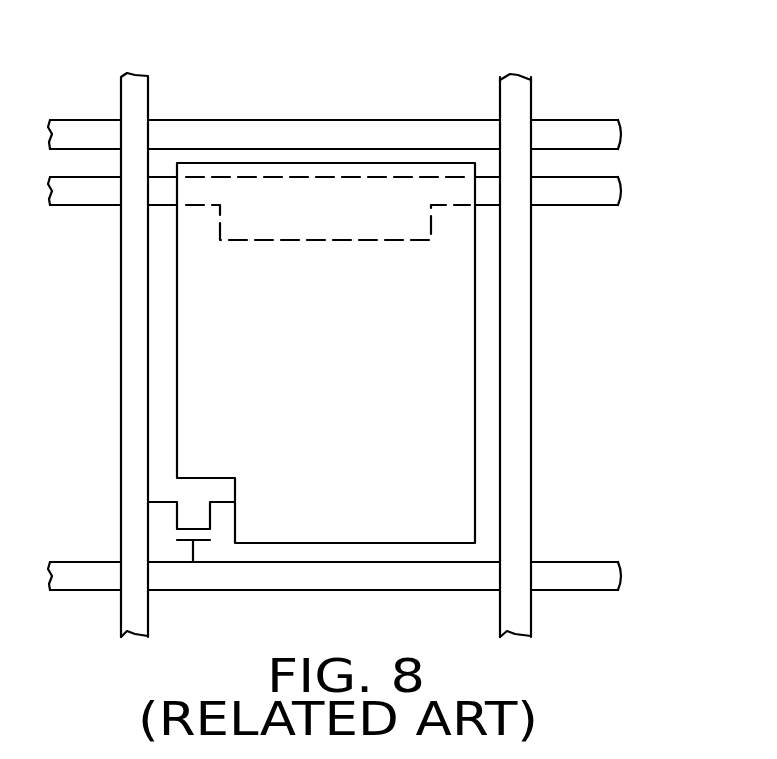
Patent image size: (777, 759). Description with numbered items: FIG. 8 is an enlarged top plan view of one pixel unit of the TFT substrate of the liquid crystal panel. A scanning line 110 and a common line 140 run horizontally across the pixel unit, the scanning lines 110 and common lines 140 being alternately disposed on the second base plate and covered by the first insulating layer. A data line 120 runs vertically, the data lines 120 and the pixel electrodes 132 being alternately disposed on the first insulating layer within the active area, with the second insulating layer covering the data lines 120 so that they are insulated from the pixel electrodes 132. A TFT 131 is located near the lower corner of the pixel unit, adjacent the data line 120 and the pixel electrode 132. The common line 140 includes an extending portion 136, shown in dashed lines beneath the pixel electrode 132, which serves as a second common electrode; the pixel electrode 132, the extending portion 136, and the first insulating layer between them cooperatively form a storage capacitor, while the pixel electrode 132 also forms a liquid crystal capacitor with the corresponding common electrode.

The scanning line 110 is at (597, 135).
The data line 120 is at (135, 97).
The TFT 131 is at (213, 533).
The pixel electrode 132 is at (409, 405).
The extending portion 136 is at (403, 242).
The common line 140 is at (602, 193).